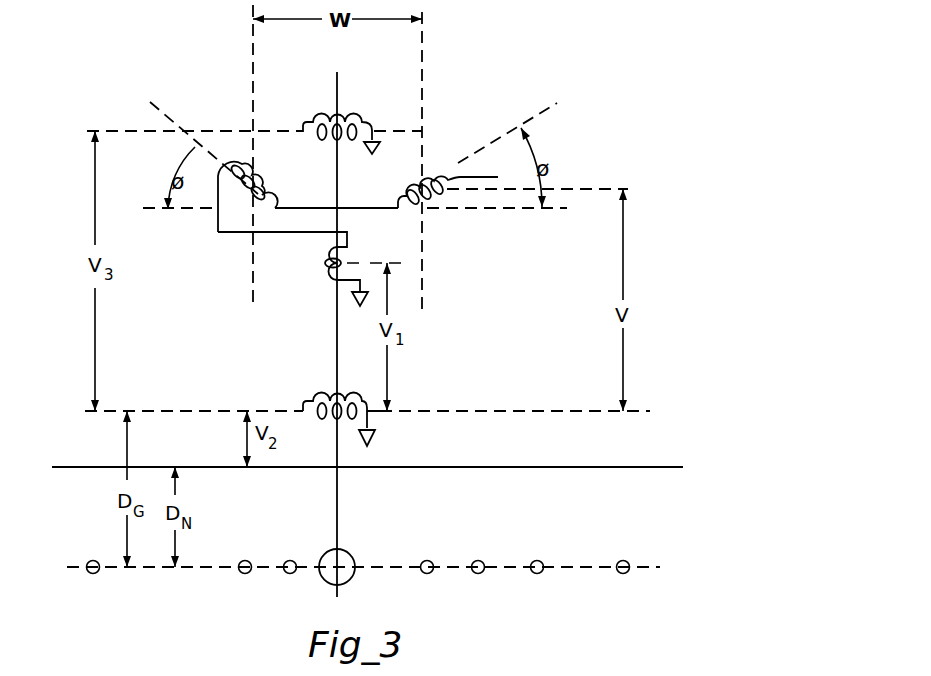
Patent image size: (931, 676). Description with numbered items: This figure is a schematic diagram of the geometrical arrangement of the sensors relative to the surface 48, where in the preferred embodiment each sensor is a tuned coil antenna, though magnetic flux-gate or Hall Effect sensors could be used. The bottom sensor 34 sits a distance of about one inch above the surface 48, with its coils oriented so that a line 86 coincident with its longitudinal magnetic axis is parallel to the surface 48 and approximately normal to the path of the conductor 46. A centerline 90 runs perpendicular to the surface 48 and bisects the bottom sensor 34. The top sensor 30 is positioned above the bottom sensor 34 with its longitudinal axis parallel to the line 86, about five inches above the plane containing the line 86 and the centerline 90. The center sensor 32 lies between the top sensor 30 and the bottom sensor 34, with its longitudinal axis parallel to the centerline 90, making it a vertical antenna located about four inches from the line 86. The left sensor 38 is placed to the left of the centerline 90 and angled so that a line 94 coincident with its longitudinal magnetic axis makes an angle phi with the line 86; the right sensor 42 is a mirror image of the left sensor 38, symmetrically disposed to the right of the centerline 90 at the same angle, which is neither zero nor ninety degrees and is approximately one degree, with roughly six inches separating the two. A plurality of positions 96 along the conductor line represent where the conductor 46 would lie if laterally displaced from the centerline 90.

The centerline 90 is at (337, 97).
The top sensor 30 is at (345, 118).
The line 94 is at (205, 151).
The left sensor 38 is at (270, 199).
The right sensor 42 is at (410, 192).
The center sensor 32 is at (323, 266).
The bottom sensor 34 is at (313, 403).
The line 86 is at (412, 410).
The surface 48 is at (472, 467).
The conductor 46 is at (345, 582).
The positions 96 is at (91, 574).